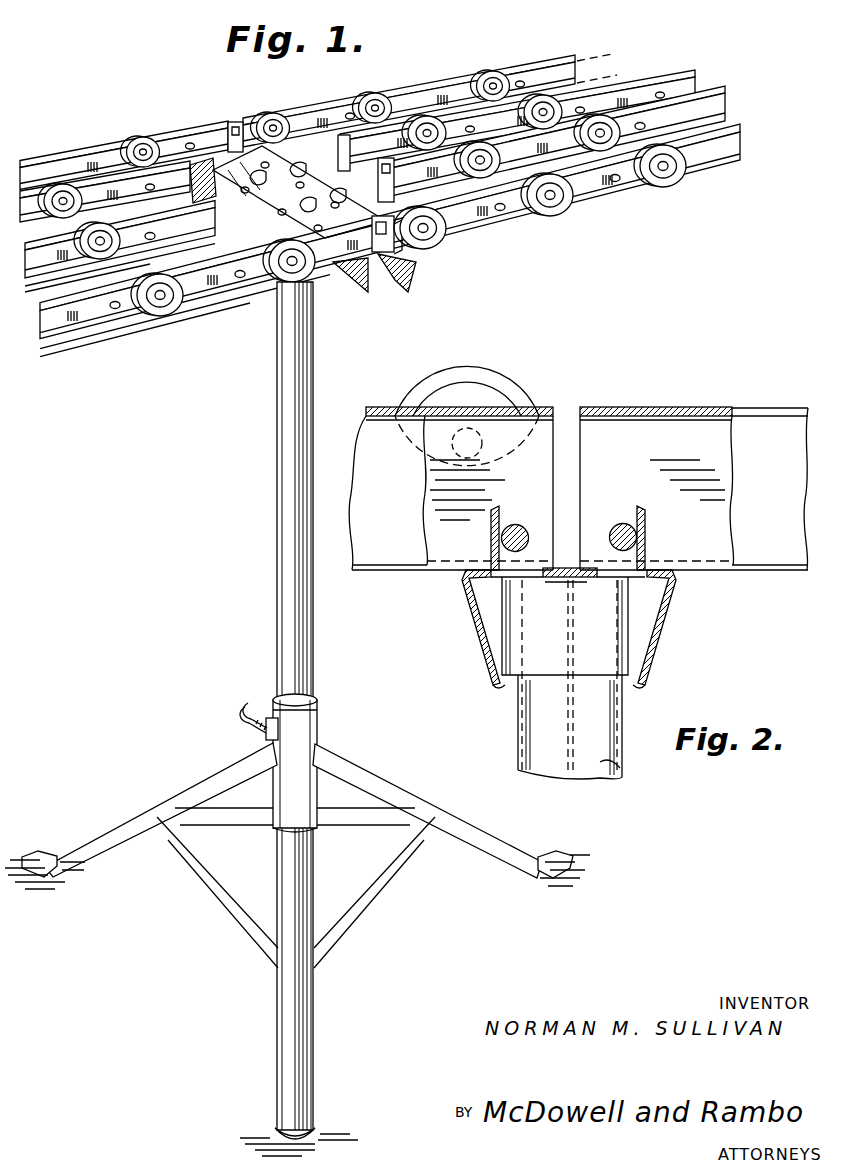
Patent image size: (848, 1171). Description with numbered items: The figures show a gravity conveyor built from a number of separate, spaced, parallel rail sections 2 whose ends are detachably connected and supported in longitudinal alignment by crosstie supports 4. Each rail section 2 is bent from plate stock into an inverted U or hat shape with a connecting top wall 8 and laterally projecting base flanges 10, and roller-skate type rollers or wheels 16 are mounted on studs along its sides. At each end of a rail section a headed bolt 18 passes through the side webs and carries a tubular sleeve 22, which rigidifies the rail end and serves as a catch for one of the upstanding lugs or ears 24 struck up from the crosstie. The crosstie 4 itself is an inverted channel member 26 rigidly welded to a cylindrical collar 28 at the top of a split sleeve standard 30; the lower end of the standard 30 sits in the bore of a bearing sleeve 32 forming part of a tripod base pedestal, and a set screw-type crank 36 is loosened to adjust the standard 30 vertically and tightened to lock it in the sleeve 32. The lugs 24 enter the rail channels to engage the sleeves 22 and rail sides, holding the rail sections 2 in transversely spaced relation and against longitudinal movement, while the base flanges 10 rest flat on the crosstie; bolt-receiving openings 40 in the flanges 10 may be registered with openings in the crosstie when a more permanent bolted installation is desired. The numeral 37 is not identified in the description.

In FIG. 1, the rail section 2 is at (463, 80).
In FIG. 1, the crosstie support 4 is at (323, 236).
In FIG. 2, the crosstie support 4 is at (571, 585).
In FIG. 2, the top wall 8 is at (650, 410).
In FIG. 2, the base flange 10 is at (773, 570).
In FIG. 1, the roller or wheel 16 is at (140, 128).
In FIG. 2, the roller or wheel 16 is at (495, 381).
In FIG. 2, the headed bolt 18 is at (518, 526).
In FIG. 1, the tubular sleeve 22 is at (365, 282).
In FIG. 2, the tubular sleeve 22 is at (607, 537).
In FIG. 1, the upstanding lug or ear 24 is at (341, 187).
In FIG. 2, the upstanding lug or ear 24 is at (490, 542).
In FIG. 2, the inverted channel member 26 is at (663, 627).
In FIG. 2, the cylindrical collar 28 is at (510, 625).
In FIG. 1, the split sleeve standard 30 is at (276, 478).
In FIG. 2, the split sleeve standard 30 is at (530, 720).
In FIG. 1, the bearing sleeve 32 is at (300, 730).
In FIG. 1, the set screw-type crank 36 is at (247, 708).
In FIG. 1, the tripod base 37 is at (297, 818).
In FIG. 1, the bolt-receiving opening 40 is at (412, 257).